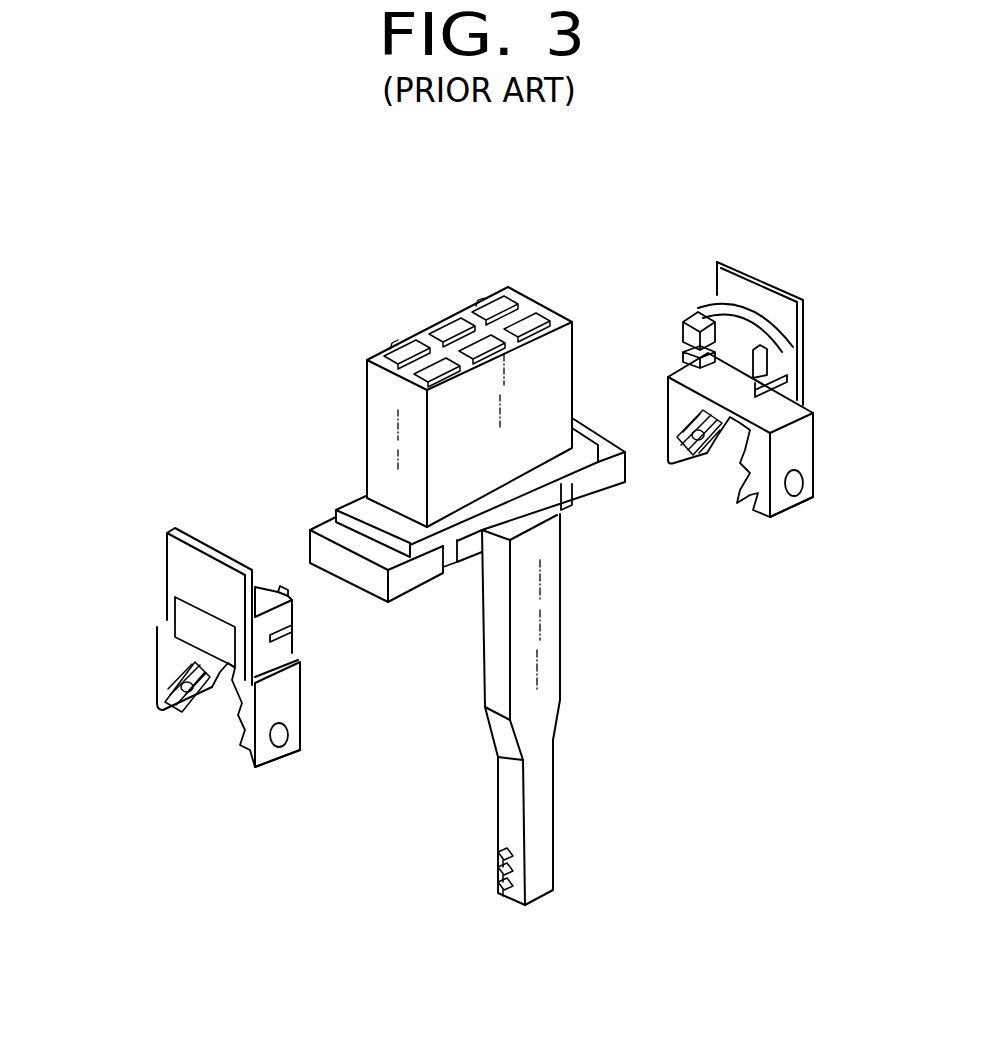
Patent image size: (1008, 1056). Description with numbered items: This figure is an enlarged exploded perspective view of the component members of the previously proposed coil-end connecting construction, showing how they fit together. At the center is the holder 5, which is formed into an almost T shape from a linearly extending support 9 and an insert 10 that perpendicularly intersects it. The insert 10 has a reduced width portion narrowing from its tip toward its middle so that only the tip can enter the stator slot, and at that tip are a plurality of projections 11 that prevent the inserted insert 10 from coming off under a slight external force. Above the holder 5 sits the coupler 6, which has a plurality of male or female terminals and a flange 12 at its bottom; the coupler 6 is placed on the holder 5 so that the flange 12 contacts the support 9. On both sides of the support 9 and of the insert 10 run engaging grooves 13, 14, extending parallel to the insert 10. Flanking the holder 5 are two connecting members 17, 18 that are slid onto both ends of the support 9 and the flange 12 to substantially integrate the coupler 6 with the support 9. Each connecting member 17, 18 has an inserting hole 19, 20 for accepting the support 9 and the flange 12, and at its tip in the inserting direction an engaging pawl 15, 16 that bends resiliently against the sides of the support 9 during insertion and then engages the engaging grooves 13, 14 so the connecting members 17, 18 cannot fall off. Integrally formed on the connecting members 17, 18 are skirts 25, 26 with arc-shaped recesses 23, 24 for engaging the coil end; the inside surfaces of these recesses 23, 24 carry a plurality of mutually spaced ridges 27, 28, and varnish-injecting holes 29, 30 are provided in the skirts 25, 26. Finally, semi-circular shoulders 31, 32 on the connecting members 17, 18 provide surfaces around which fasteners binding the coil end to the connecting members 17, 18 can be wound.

The holder 5 is at (572, 722).
The coupler 6 is at (384, 427).
The support 9 is at (413, 580).
The insert 10 is at (557, 657).
The projections 11 is at (498, 886).
The flange 12 is at (362, 508).
The engaging groove 13 is at (572, 500).
The engaging groove 14 is at (450, 570).
The engaging pawl 15 is at (710, 363).
The engaging pawl 16 is at (290, 630).
The connecting member 17 is at (812, 357).
The connecting member 18 is at (148, 565).
The inserting hole 19 is at (715, 350).
The inserting hole 20 is at (177, 620).
The arc-shaped recess 23 is at (690, 463).
The arc-shaped recess 24 is at (178, 705).
The skirt 25 is at (778, 507).
The skirt 26 is at (278, 755).
The ridges 27 is at (753, 473).
The ridges 28 is at (235, 703).
The varnish-injecting hole 29 is at (802, 485).
The varnish-injecting hole 30 is at (288, 735).
The semi-circular shoulder 31 is at (722, 306).
The semi-circular shoulder 32 is at (258, 600).